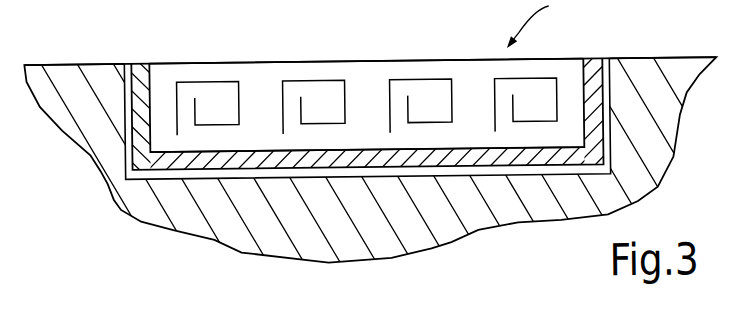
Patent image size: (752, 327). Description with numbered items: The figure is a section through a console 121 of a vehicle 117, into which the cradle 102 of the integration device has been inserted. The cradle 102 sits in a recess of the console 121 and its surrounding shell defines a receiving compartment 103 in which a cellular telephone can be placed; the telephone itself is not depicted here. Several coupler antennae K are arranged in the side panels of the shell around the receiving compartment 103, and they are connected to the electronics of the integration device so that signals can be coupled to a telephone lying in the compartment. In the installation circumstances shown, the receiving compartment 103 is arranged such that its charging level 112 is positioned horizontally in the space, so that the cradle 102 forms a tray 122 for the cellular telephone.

The vehicle 117 is at (79, 197).
The console 121 is at (67, 62).
The cradle 102 is at (546, 60).
The charging level 112 is at (370, 149).
The receiving compartment 103 is at (470, 81).
The coupler antennae K is at (217, 79).
The tray 122 is at (542, 23).